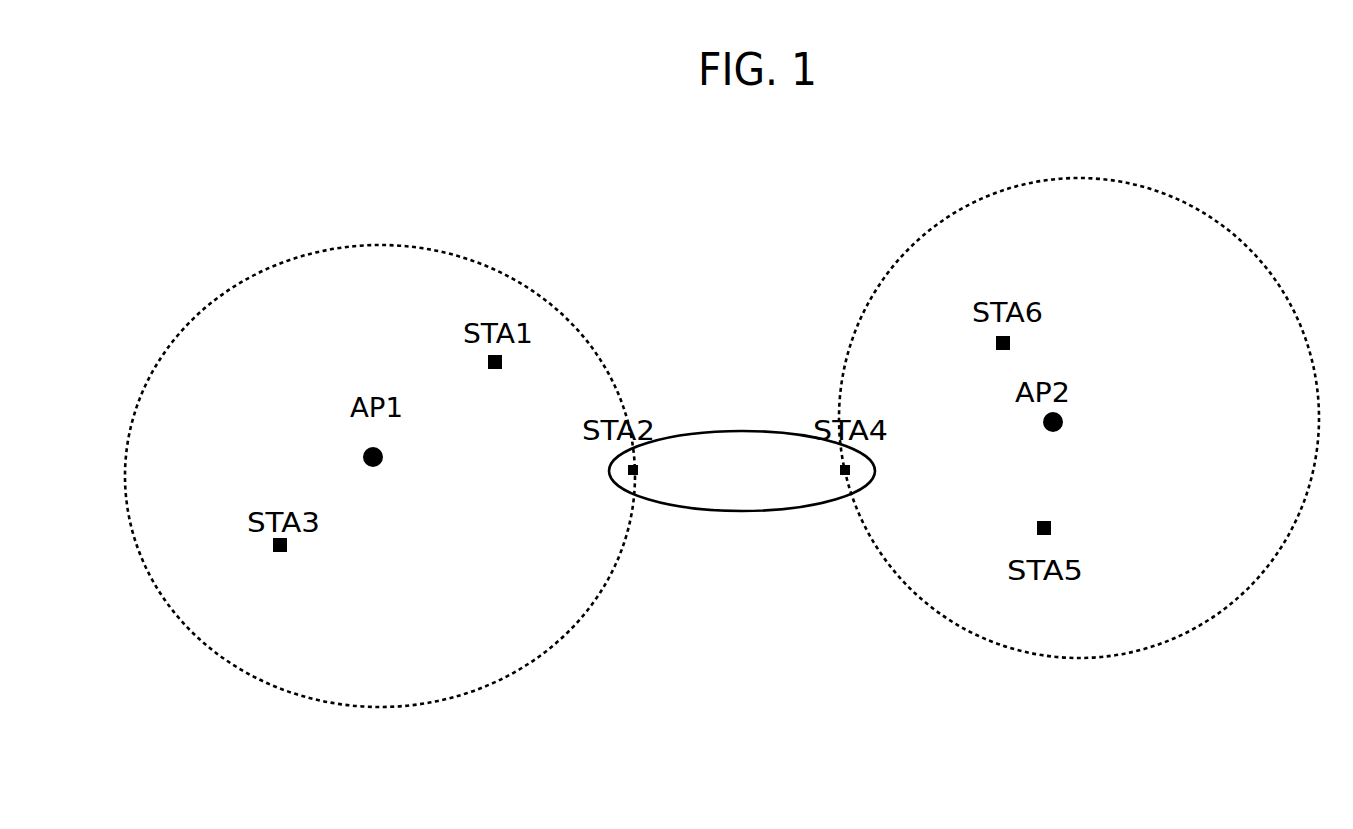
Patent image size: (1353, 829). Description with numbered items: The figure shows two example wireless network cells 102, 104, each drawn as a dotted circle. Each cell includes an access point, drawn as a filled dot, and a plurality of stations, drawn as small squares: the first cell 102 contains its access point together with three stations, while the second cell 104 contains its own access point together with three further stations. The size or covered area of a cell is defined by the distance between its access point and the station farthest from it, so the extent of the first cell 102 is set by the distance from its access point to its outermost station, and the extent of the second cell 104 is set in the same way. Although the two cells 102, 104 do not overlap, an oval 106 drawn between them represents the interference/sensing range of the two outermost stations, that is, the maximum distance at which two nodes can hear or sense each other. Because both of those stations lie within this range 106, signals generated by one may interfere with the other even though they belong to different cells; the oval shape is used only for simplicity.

The cell 102 is at (465, 258).
The cell 104 is at (1158, 183).
The oval 106 is at (713, 430).